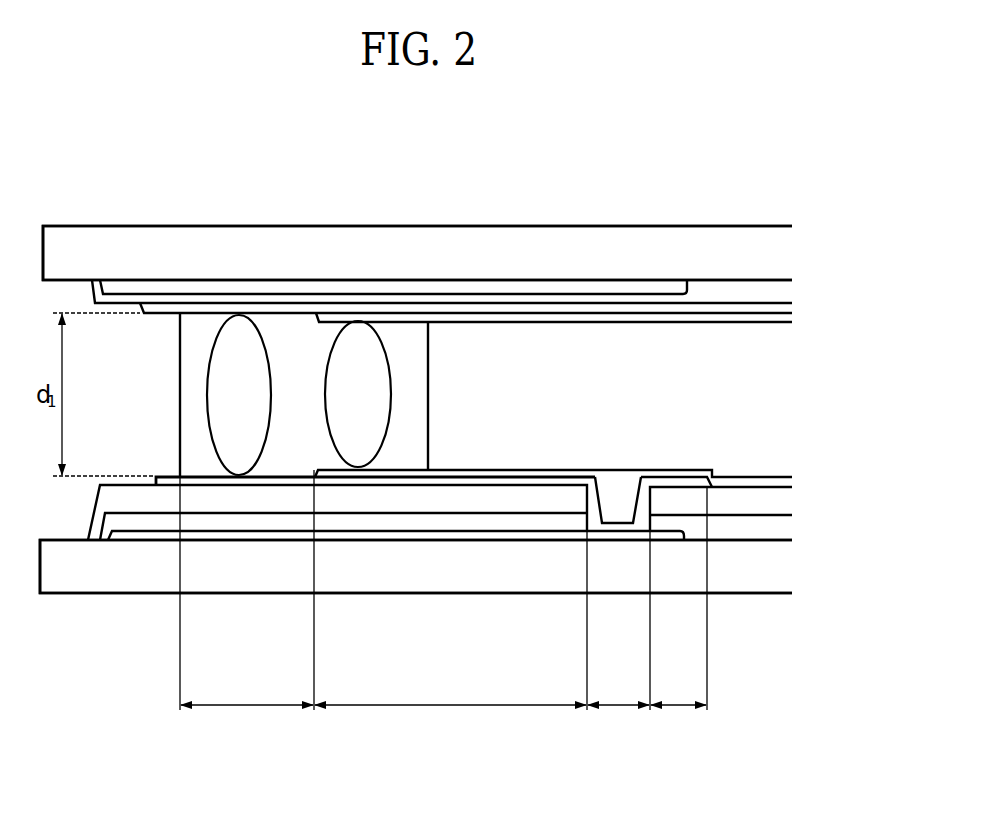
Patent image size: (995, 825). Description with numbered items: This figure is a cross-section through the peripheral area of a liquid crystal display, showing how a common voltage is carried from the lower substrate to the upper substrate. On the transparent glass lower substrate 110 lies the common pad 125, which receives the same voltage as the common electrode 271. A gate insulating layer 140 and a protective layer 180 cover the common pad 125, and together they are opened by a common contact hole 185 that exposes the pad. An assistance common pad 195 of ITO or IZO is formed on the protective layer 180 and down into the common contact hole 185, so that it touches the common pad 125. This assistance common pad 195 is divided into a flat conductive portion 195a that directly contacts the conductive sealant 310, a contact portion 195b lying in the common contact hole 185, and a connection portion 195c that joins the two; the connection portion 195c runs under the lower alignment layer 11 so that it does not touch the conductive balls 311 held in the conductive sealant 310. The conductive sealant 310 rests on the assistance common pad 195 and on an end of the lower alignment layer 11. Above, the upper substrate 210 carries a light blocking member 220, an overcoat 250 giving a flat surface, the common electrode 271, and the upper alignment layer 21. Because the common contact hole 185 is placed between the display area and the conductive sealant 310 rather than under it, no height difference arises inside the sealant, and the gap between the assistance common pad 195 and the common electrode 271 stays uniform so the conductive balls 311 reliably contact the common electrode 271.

The lower alignment layer 11 is at (747, 478).
The upper alignment layer 21 is at (753, 320).
The lower substrate 110 is at (563, 572).
The common pad 125 is at (150, 537).
The gate insulating layer 140 is at (368, 522).
The protective layer 180 is at (440, 500).
The common contact hole 185 is at (587, 500).
The assistance common pad 195 is at (275, 486).
The conductive portion 195a is at (247, 590).
The contact portion 195b is at (618, 598).
The connection portion 195c is at (511, 598).
The upper substrate 210 is at (515, 258).
The light blocking member 220 is at (577, 285).
The overcoat 250 is at (640, 297).
The common electrode 271 is at (705, 309).
The conductive sealant 310 is at (178, 409).
The conductive balls 311 is at (222, 372).